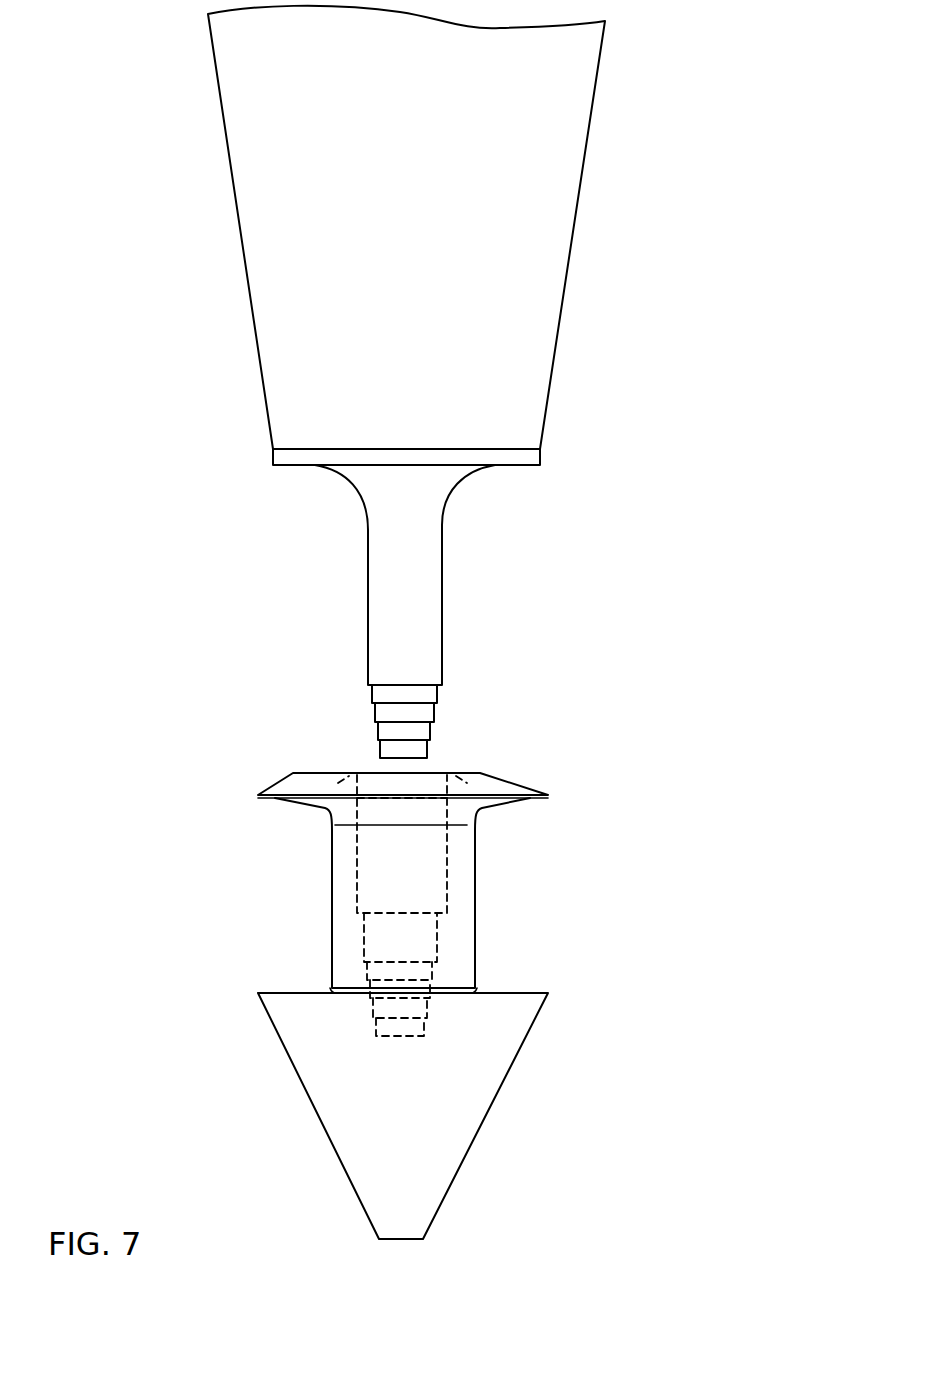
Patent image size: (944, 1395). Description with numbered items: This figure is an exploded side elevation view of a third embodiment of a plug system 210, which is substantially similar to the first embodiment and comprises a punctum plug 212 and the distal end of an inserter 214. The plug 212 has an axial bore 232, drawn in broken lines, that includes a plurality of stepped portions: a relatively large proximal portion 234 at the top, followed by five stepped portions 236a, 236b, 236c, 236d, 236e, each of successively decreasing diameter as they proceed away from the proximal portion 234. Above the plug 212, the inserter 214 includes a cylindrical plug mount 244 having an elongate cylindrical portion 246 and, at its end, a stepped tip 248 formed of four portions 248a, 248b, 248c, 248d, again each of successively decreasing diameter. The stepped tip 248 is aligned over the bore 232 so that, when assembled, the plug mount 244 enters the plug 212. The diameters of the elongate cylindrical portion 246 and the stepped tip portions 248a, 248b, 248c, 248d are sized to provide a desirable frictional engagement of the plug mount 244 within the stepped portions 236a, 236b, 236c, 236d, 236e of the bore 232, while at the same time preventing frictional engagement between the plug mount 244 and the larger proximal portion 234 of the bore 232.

The plug system 210 is at (469, 643).
The plug 212 is at (407, 1006).
The inserter 214 is at (404, 390).
The bore 232 is at (449, 914).
The proximal portion 234 is at (437, 877).
The stepped portion 236a is at (427, 948).
The stepped portion 236b is at (433, 968).
The stepped portion 236c is at (430, 990).
The stepped portion 236d is at (425, 1010).
The stepped portion 236e is at (508, 1036).
The cylindrical plug mount 244 is at (457, 620).
The elongate cylindrical portion 246 is at (442, 637).
The stepped tip 248 is at (495, 722).
The stepped tip portion 248a is at (437, 693).
The stepped tip portion 248b is at (434, 712).
The stepped tip portion 248c is at (431, 732).
The stepped tip portion 248d is at (428, 750).